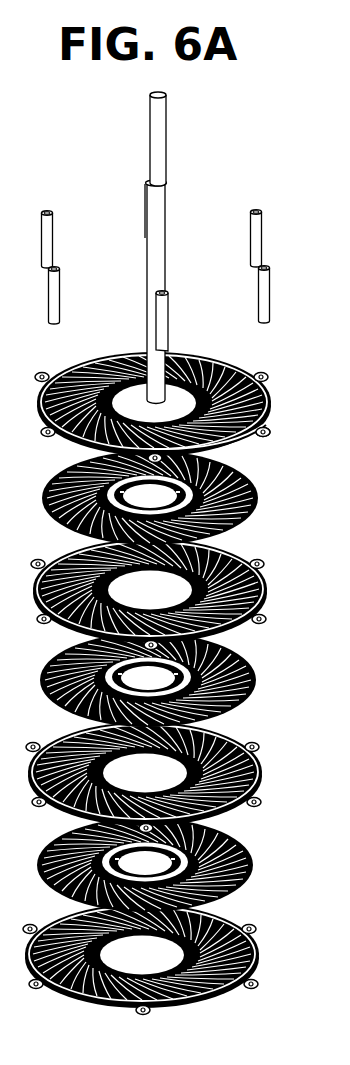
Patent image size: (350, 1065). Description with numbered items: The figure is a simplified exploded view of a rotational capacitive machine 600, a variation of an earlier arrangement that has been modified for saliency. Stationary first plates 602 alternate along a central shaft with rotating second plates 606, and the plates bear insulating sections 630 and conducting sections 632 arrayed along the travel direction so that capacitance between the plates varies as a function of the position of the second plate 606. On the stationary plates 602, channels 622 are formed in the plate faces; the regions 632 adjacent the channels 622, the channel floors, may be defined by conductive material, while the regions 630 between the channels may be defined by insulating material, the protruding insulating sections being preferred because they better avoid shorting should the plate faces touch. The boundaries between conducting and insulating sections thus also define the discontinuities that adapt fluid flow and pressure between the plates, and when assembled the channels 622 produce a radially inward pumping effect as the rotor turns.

The rotational capacitive machine 600 is at (66, 198).
The stationary first plate 602 is at (216, 360).
The rotating second plate 606 is at (241, 513).
The channels 622 is at (224, 432).
The insulating sections 630 is at (262, 423).
The conducting sections 632 is at (226, 446).